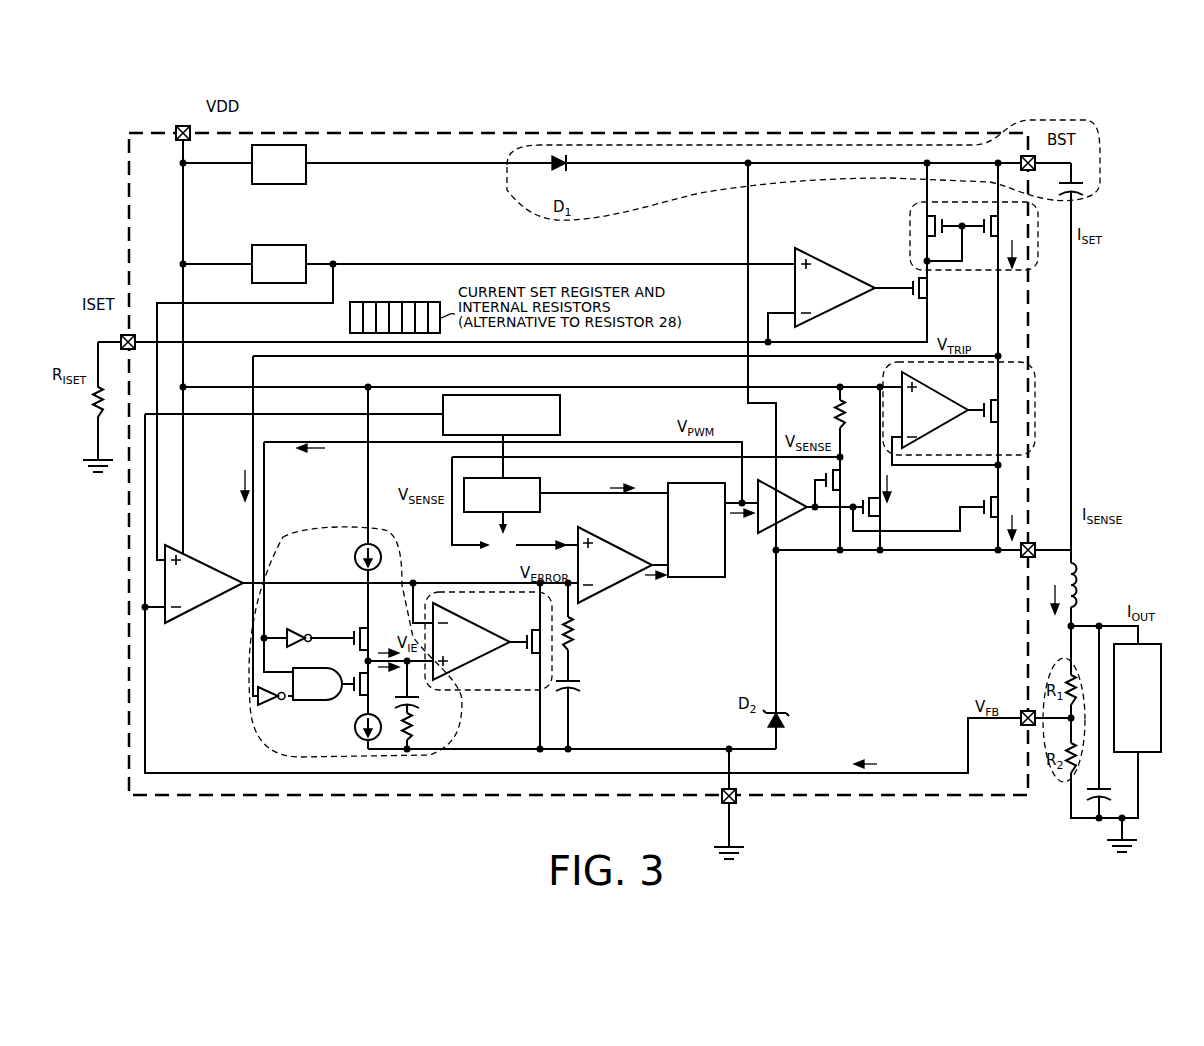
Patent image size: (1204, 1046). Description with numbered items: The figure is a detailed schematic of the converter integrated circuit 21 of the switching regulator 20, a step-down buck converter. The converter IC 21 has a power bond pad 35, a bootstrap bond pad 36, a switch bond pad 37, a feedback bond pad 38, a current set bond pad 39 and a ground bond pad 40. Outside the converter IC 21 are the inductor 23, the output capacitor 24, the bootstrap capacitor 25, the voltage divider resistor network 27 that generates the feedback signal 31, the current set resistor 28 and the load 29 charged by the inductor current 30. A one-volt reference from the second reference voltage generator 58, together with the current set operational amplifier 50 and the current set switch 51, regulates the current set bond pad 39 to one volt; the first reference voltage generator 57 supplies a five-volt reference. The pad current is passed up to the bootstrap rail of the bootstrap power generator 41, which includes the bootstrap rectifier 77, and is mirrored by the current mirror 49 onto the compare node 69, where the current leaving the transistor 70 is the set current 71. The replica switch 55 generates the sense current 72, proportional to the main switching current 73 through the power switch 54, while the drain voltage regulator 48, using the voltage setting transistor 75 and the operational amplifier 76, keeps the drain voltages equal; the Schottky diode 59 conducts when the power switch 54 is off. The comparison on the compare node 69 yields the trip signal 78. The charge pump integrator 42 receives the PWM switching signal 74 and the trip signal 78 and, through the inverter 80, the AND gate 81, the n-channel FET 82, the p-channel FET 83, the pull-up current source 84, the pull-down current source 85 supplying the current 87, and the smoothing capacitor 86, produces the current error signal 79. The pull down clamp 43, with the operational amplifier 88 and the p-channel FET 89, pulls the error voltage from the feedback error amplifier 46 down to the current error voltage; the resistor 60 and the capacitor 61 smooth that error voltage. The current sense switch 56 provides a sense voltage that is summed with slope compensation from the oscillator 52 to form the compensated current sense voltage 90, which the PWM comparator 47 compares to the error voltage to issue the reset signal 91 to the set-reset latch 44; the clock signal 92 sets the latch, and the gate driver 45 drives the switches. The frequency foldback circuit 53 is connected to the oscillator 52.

The switching regulator 20 is at (1100, 97).
The converter integrated circuit 21 is at (760, 133).
The inductor 23 is at (1080, 580).
The output capacitor 24 is at (1102, 789).
The bootstrap capacitor 25 is at (1077, 183).
The voltage divider resistor network 27 is at (1060, 782).
The current set resistor 28 is at (90, 398).
The load 29 is at (1137, 698).
The inductor current 30 is at (1047, 601).
The feedback signal 31 is at (870, 762).
The power bond pad 35 is at (190, 131).
The bootstrap bond pad 36 is at (1036, 160).
The switch bond pad 37 is at (1024, 557).
The feedback bond pad 38 is at (1022, 725).
The current set bond pad 39 is at (122, 337).
The ground bond pad 40 is at (735, 803).
The bootstrap power generator 41 is at (505, 185).
The charge pump integrator 42 is at (250, 702).
The pull down clamp 43 is at (490, 672).
The set-reset latch 44 is at (696, 530).
The gate driver 45 is at (785, 525).
The feedback error amplifier 46 is at (200, 607).
The PWM comparator 47 is at (615, 548).
The drain voltage regulator 48 is at (946, 455).
The current mirror 49 is at (910, 240).
The current set operational amplifier 50 is at (835, 310).
The current set switch 51 is at (932, 289).
The oscillator 52 is at (540, 488).
The frequency foldback circuit 53 is at (561, 402).
The power switch 54 is at (881, 513).
The replica switch 55 is at (1000, 512).
The current sense switch 56 is at (841, 481).
The first reference voltage generator 57 is at (297, 184).
The second reference voltage generator 58 is at (265, 245).
The Schottky diode 59 is at (765, 722).
The resistor 60 is at (575, 636).
The capacitor 61 is at (583, 685).
The compare node 69 is at (999, 356).
The transistor 70 is at (998, 226).
The set current 71 is at (1012, 250).
The sense current 72 is at (1012, 522).
The main switching current 73 is at (891, 488).
The PWM switching signal 74 is at (316, 451).
The voltage setting transistor 75 is at (999, 412).
The operational amplifier 76 is at (944, 396).
The bootstrap rectifier 77 is at (558, 171).
The trip signal 78 is at (244, 481).
The current error signal 79 is at (384, 651).
The inverter 80 is at (296, 628).
The AND gate 81 is at (317, 684).
The n-channel FET 82 is at (353, 676).
The p-channel FET 83 is at (355, 628).
The pull-up current source 84 is at (355, 551).
The pull-down current source 85 is at (355, 721).
The capacitor 86 is at (421, 706).
The current 87 is at (387, 670).
The operational amplifier 88 is at (468, 620).
The p-channel FET 89 is at (528, 630).
The compensated current sense voltage 90 is at (557, 540).
The reset signal 91 is at (652, 577).
The clock signal 92 is at (617, 488).